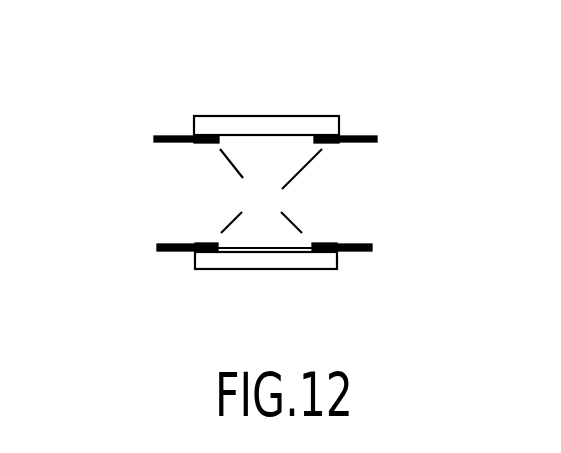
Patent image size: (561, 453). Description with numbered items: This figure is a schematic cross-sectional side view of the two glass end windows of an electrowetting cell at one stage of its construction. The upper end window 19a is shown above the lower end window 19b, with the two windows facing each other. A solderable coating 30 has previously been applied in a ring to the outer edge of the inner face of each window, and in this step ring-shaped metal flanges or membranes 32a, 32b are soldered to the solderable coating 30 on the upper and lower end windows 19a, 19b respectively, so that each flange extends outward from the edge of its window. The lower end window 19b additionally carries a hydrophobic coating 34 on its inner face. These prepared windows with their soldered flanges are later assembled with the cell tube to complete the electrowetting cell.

The upper end window 19a is at (260, 121).
The lower end window 19b is at (303, 262).
The ring-shaped metal flange 32a is at (153, 137).
The ring-shaped metal flange 32b is at (157, 247).
The solderable coating 30 is at (271, 191).
The hydrophobic coating 34 is at (260, 247).